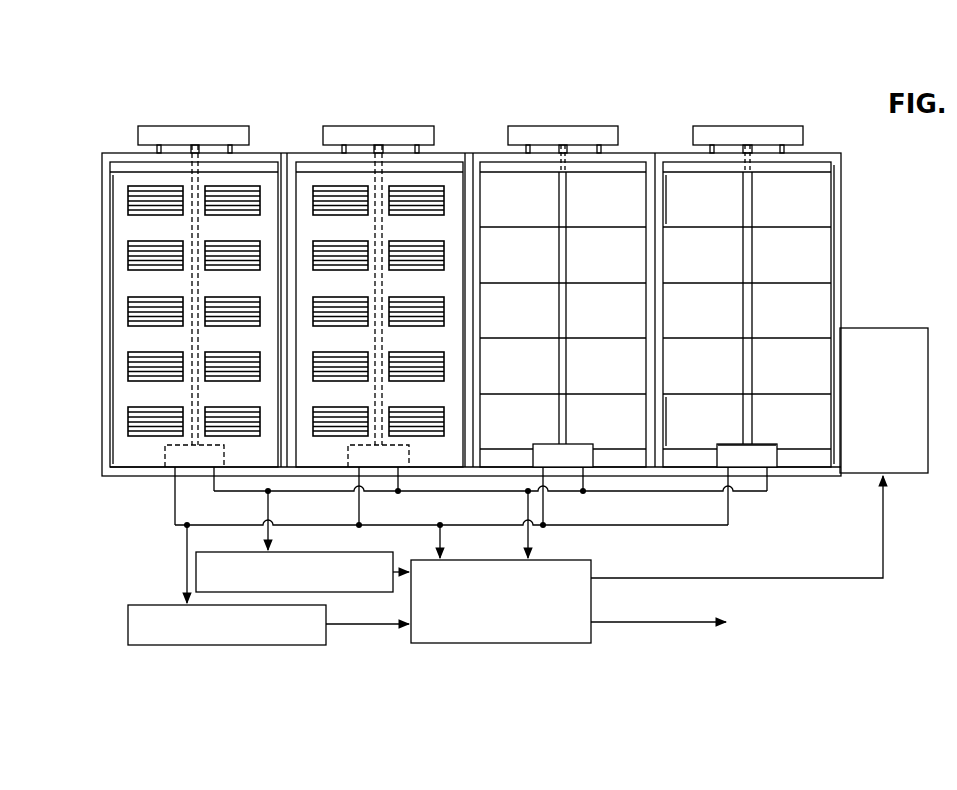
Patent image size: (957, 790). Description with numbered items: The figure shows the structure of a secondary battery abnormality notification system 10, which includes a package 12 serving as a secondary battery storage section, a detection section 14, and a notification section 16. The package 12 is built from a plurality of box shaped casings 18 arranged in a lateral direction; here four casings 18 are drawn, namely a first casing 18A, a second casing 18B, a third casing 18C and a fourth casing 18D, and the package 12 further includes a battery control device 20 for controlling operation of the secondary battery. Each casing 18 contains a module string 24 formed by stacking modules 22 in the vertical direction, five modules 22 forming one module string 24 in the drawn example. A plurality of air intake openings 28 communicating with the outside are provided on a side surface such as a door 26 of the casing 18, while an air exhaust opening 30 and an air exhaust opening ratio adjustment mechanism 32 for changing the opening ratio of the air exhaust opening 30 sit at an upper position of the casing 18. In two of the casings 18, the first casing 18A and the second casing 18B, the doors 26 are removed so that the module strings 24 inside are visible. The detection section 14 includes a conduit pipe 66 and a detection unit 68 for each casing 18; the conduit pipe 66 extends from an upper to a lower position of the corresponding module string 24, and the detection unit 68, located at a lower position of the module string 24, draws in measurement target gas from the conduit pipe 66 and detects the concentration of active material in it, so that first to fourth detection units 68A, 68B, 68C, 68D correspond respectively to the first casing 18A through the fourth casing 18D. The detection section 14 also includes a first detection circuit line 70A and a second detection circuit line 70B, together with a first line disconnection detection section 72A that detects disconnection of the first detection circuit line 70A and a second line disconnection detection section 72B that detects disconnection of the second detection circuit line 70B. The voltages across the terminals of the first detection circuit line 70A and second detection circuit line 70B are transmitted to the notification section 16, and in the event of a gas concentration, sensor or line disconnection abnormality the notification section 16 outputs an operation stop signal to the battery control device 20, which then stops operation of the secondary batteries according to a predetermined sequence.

The secondary battery abnormality notification system 10 is at (949, 149).
The package 12 is at (847, 142).
The detection section 14 is at (760, 521).
The notification section 16 is at (593, 568).
The casing 18 is at (843, 170).
The first casing 18A is at (820, 153).
The second casing 18B is at (627, 153).
The third casing 18C is at (450, 153).
The fourth casing 18D is at (266, 153).
The battery control device 20 is at (877, 328).
The module 22 is at (813, 211).
The module string 24 is at (836, 272).
The door 26 is at (125, 284).
The air intake opening 28 is at (140, 207).
The air exhaust opening 30 is at (206, 150).
The air exhaust opening ratio adjustment mechanism 32 is at (175, 133).
The conduit pipe 66 is at (196, 233).
The detection unit 68 is at (767, 436).
The first detection unit 68A is at (722, 443).
The second detection unit 68B is at (588, 438).
The third detection unit 68C is at (413, 456).
The fourth detection unit 68D is at (165, 449).
The first detection circuit line 70A is at (657, 528).
The second detection circuit line 70B is at (667, 493).
The first line disconnection detection section 72A is at (165, 605).
The second line disconnection detection section 72B is at (240, 551).